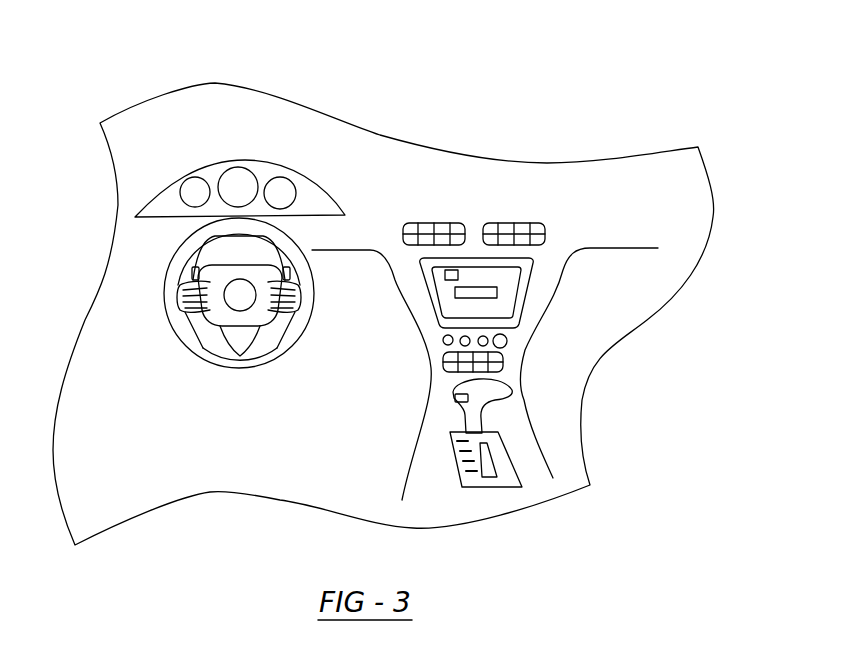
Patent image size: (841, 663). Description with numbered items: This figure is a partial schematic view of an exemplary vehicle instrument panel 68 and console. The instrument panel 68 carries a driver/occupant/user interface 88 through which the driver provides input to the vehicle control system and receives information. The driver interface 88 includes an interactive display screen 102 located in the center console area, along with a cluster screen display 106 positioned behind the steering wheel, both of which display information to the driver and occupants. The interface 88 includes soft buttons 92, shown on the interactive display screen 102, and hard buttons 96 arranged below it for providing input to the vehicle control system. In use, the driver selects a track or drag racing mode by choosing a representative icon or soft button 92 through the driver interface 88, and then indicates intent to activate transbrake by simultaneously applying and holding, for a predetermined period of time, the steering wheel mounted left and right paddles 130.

The instrument panel 68 is at (490, 157).
The cluster screen display 106 is at (222, 158).
The steering wheel mounted left and right paddles 130 is at (192, 272).
The driver/occupant/user interface 88 is at (530, 293).
The interactive display screen 102 is at (507, 277).
The soft button 92 is at (451, 270).
The hard button 96 is at (507, 342).